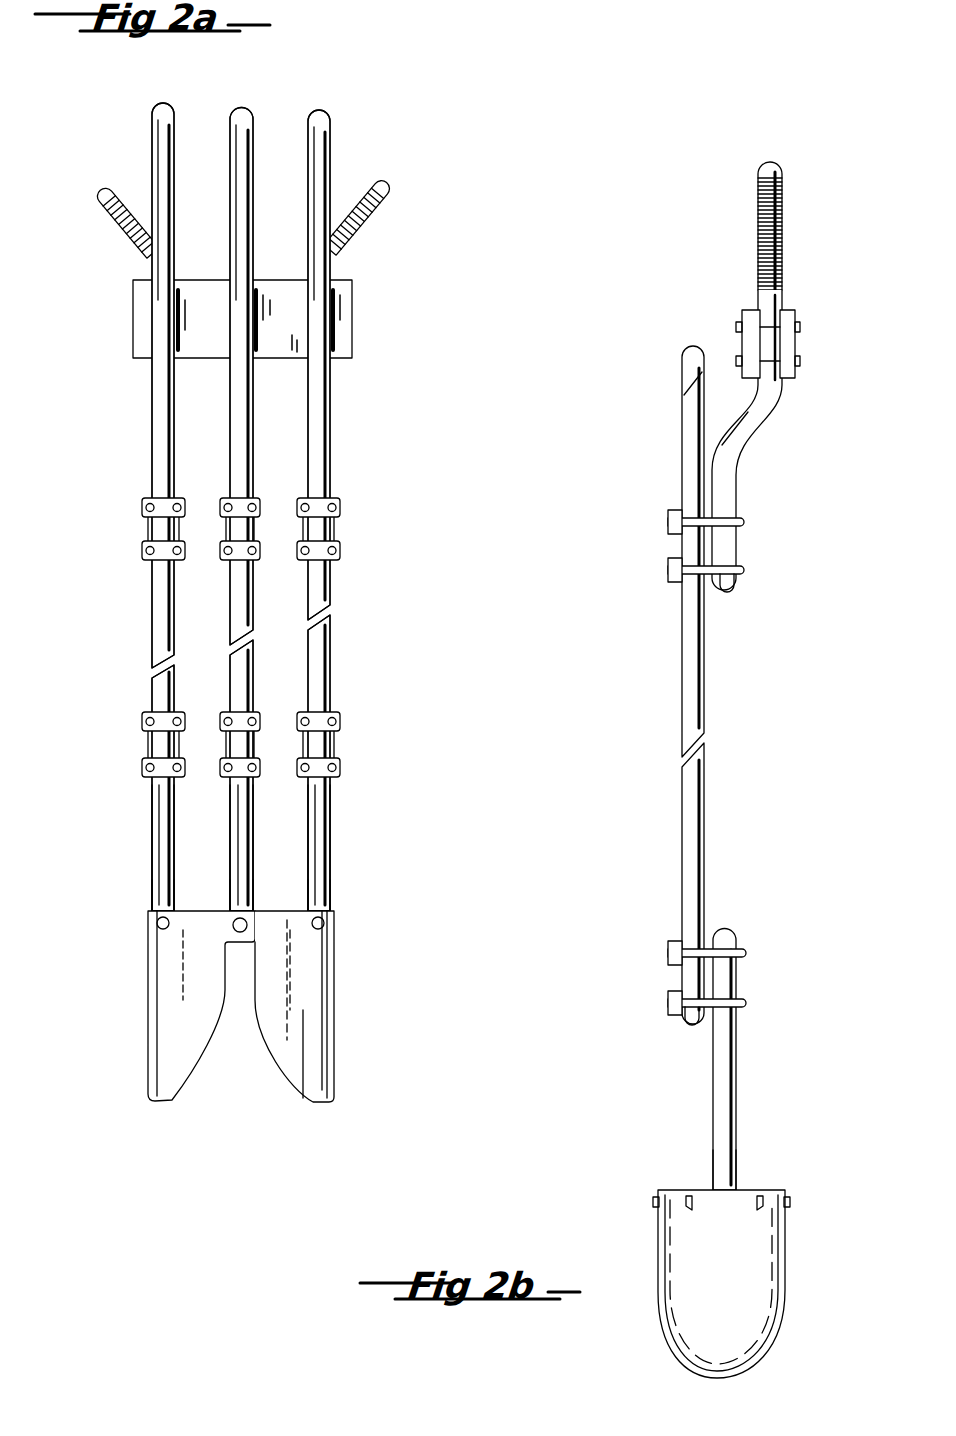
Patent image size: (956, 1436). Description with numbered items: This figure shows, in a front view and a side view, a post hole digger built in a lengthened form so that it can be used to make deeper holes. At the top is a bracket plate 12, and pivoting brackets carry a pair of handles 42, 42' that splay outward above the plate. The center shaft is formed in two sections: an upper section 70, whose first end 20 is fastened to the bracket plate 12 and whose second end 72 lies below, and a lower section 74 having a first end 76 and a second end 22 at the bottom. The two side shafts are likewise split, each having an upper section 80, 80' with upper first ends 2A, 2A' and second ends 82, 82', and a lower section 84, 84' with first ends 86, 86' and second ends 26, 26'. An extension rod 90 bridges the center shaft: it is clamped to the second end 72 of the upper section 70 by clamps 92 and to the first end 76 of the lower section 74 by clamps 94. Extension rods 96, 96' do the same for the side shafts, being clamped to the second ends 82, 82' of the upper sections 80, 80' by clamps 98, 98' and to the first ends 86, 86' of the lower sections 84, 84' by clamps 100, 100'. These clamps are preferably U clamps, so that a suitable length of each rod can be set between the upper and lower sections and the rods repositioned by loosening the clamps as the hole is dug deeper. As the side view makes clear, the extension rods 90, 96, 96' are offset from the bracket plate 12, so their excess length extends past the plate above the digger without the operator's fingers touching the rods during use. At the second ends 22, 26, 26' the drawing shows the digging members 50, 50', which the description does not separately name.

In FIG. 2a, the bracket plate 12 is at (203, 280).
In FIG. 2b, the bracket plate 12 is at (790, 318).
In FIG. 2a, the handle 42 is at (104, 209).
In FIG. 2b, the handle 42 is at (770, 226).
In FIG. 2a, the handle 42' is at (370, 222).
In FIG. 2a, the left handle assembly 2A is at (136, 507).
In FIG. 2a, the right handle assembly 2A' is at (352, 510).
In FIG. 2b, the right handle assembly 2A' is at (770, 440).
In FIG. 2a, the first end of center shaft 20 is at (244, 378).
In FIG. 2a, the upper section of center shaft 70 is at (233, 425).
In FIG. 2a, the upper section of first side shaft 80 is at (124, 385).
In FIG. 2a, the upper section of second side shaft 80' is at (362, 365).
In FIG. 2b, the upper section of second side shaft 80' is at (749, 551).
In FIG. 2a, the clamps 92 is at (260, 503).
In FIG. 2a, the second end of upper section 72 is at (258, 548).
In FIG. 2a, the clamps 98 is at (159, 518).
In FIG. 2a, the clamps 98' is at (351, 543).
In FIG. 2b, the clamps 98' is at (645, 546).
In FIG. 2a, the second end of upper section 82 is at (135, 550).
In FIG. 2a, the second end of upper section 82' is at (351, 550).
In FIG. 2b, the second end of upper section 82' is at (739, 555).
In FIG. 2a, the extension rod 96 is at (133, 748).
In FIG. 2a, the extension rod 96' is at (294, 755).
In FIG. 2b, the extension rod 96' is at (667, 844).
In FIG. 2a, the extension rod 90 is at (230, 616).
In FIG. 2a, the clamps 100 is at (161, 745).
In FIG. 2a, the clamps 100' is at (355, 720).
In FIG. 2b, the clamps 100' is at (644, 978).
In FIG. 2a, the clamps 94 is at (268, 695).
In FIG. 2a, the first end of lower section 76 is at (262, 745).
In FIG. 2a, the first end of lower section 86 is at (138, 782).
In FIG. 2a, the first end of lower section 86' is at (346, 782).
In FIG. 2b, the first end of lower section 86' is at (734, 985).
In FIG. 2a, the lower section of first side shaft 84 is at (119, 848).
In FIG. 2a, the lower section of second side shaft 84' is at (357, 848).
In FIG. 2b, the lower section of second side shaft 84' is at (754, 1059).
In FIG. 2a, the lower section of center shaft 74 is at (252, 855).
In FIG. 2a, the second end of center shaft 22 is at (230, 892).
In FIG. 2a, the second end of first side shaft 26 is at (129, 898).
In FIG. 2a, the second end of second side shaft 26' is at (354, 898).
In FIG. 2b, the second end of second side shaft 26' is at (764, 1170).
In FIG. 2a, the left blade 50 is at (173, 1008).
In FIG. 2a, the right blade 50' is at (325, 1006).
In FIG. 2b, the right blade 50' is at (694, 1284).